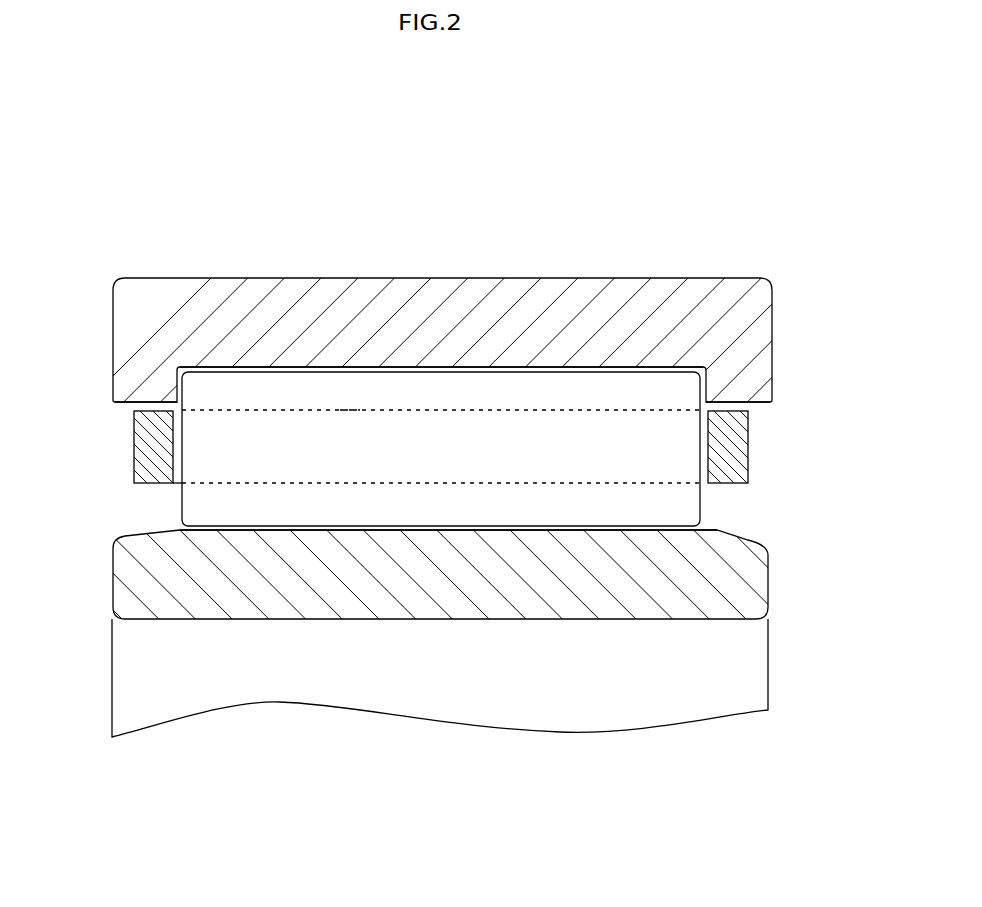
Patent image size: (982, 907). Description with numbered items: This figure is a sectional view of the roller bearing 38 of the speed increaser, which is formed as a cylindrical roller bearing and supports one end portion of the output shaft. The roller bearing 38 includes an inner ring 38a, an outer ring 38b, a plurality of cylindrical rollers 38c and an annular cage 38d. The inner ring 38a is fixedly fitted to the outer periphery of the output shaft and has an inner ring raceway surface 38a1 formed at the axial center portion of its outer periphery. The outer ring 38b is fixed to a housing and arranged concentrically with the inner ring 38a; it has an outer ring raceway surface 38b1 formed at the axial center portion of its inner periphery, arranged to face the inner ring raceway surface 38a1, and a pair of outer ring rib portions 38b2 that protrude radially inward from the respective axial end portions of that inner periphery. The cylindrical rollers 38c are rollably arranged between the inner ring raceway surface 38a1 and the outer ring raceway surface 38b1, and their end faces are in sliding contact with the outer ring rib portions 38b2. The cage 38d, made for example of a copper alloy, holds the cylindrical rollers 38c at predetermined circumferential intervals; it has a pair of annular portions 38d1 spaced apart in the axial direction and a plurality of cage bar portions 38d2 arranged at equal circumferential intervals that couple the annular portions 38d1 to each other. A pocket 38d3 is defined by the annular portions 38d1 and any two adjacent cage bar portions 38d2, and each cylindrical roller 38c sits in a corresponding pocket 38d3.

The roller bearing 38 is at (743, 251).
The inner ring 38a is at (513, 622).
The inner ring raceway surface 38a1 is at (312, 528).
The outer ring 38b is at (412, 278).
The outer ring raceway surface 38b1 is at (470, 370).
The outer ring rib portions 38b2 is at (771, 405).
The cylindrical rollers 38c is at (700, 509).
The cage 38d is at (763, 478).
The annular portions 38d1 is at (743, 433).
The cage bar portions 38d2 is at (349, 408).
The pocket 38d3 is at (170, 486).